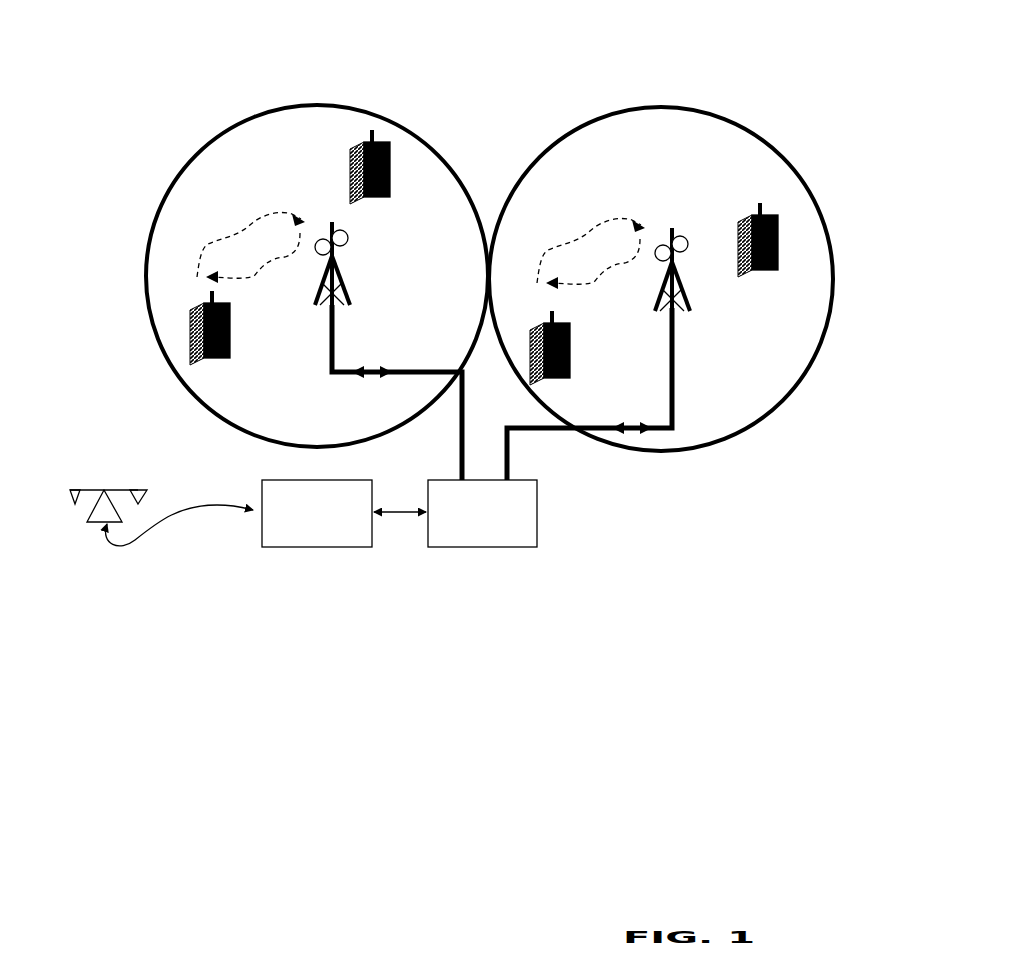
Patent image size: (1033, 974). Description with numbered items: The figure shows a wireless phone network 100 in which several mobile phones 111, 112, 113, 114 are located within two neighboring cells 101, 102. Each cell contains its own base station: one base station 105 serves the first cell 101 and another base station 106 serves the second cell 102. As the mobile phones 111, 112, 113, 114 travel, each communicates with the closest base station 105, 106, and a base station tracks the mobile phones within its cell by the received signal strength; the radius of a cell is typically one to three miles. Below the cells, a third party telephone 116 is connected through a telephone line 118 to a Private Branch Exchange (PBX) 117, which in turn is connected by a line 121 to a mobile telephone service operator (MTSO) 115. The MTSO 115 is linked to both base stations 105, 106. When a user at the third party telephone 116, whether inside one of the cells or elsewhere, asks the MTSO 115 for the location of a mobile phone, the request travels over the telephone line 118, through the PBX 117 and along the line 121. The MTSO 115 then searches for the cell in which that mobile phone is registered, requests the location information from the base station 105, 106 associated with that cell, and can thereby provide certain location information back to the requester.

The wireless phone network 100 is at (542, 103).
The cell 101 is at (196, 152).
The cell 102 is at (740, 124).
The base station 105 is at (353, 277).
The base station 106 is at (688, 277).
The mobile phone 111 is at (188, 328).
The mobile phone 112 is at (393, 174).
The mobile phone 113 is at (576, 347).
The mobile phone 114 is at (781, 251).
The mobile telephone service operator (MTSO) 115 is at (544, 512).
The third party telephone 116 is at (131, 481).
The Private Branch Exchange (PBX) 117 is at (280, 552).
The telephone line 118 is at (203, 557).
The line 121 is at (400, 524).